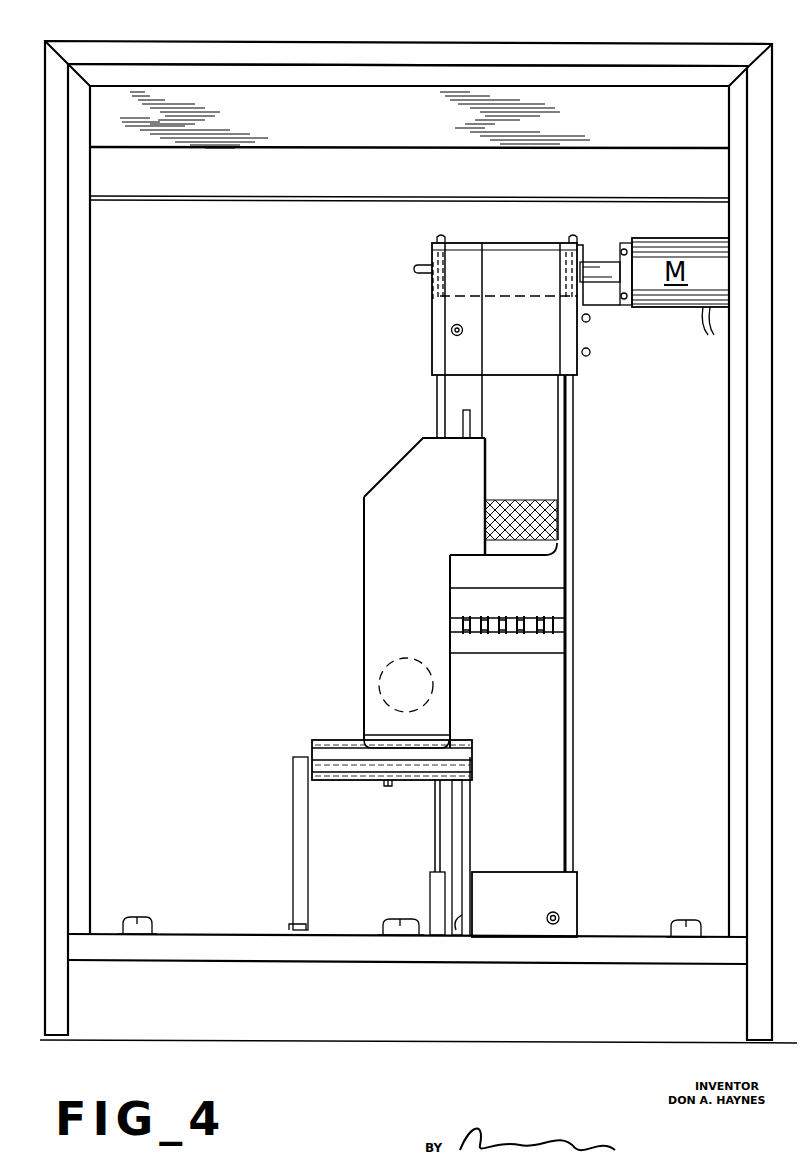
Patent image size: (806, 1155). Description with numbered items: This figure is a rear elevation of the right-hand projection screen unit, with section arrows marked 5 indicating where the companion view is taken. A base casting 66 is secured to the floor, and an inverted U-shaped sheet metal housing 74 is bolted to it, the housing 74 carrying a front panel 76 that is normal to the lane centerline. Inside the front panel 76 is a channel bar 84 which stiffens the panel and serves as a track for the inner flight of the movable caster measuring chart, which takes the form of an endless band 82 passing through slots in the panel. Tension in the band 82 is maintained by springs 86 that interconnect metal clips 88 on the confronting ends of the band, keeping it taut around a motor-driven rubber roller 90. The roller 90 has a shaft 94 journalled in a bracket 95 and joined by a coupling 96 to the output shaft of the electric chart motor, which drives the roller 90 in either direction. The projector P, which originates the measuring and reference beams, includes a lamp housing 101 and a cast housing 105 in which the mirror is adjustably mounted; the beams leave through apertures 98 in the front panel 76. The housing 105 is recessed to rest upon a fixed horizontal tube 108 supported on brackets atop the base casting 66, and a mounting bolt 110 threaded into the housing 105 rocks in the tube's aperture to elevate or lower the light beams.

The sheet metal housing 74 is at (96, 42).
The front panel 76 is at (258, 407).
The base casting 66 is at (372, 1011).
The motor-driven rubber roller 90 is at (453, 300).
The shaft 94 is at (423, 266).
The bracket 95 is at (432, 283).
The coupling 96 is at (592, 262).
The lamp housing 101 is at (548, 432).
The cast housing 105 is at (372, 609).
The projector P is at (363, 581).
The metal clips 88 is at (558, 605).
The springs 86 is at (566, 628).
The apertures 98 is at (380, 686).
The endless band 82 is at (548, 690).
The channel bar 84 is at (572, 770).
The fixed horizontal tube 108 is at (312, 741).
The mounting bolt 110 is at (392, 784).
The section line 5 is at (569, 45).